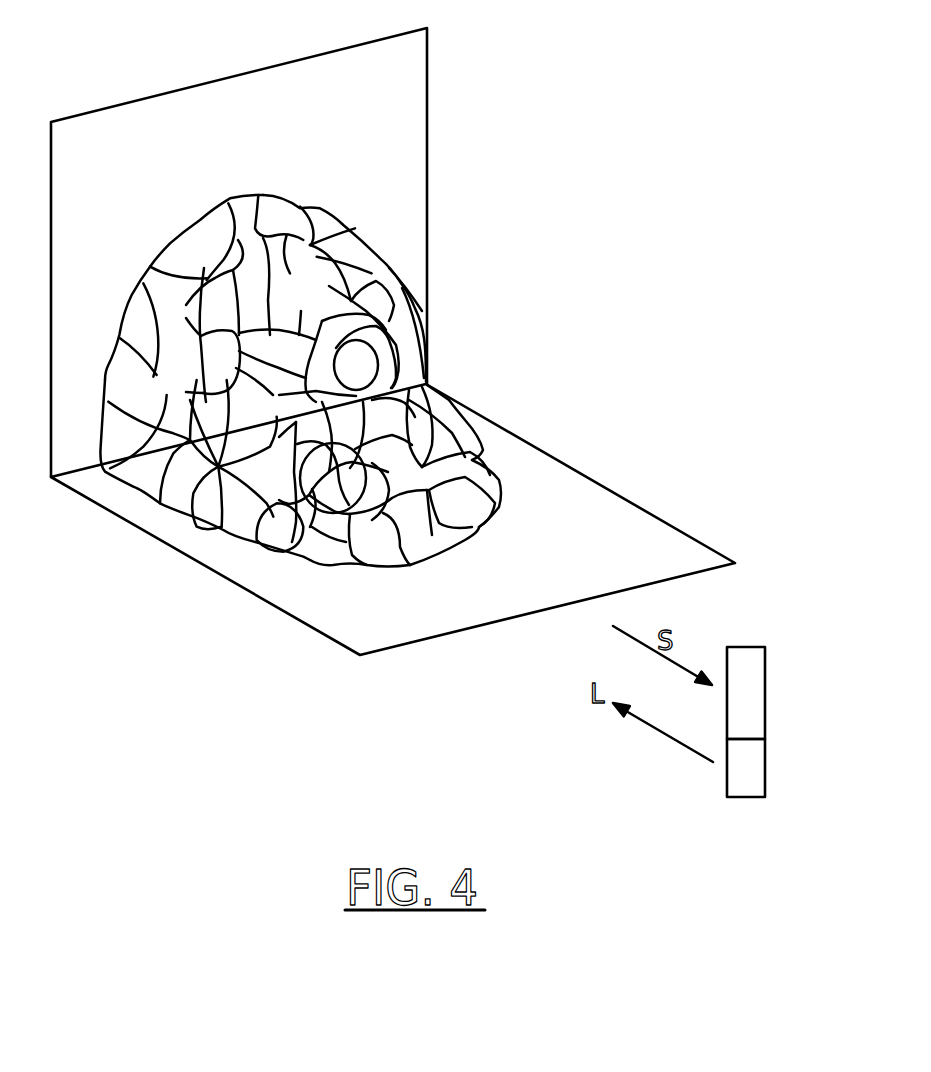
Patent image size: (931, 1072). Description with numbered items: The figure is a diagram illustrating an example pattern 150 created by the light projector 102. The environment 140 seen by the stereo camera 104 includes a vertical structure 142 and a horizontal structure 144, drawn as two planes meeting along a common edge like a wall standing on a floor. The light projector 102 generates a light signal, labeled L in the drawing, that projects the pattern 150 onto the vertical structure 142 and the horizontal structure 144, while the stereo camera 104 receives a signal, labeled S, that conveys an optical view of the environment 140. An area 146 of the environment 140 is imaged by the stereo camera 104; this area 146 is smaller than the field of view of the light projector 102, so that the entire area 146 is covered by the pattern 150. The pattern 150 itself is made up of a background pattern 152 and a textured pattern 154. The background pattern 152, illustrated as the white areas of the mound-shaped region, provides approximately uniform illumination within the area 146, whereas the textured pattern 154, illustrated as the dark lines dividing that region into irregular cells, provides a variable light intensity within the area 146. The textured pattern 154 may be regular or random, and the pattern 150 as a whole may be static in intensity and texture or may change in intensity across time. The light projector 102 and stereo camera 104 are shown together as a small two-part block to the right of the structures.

The environment 140 is at (386, 341).
The vertical structures 142 is at (310, 141).
The horizontal structures 144 is at (640, 560).
The area 146 is at (318, 403).
The pattern 150 is at (337, 295).
The background pattern 152 is at (477, 528).
The textured pattern 154 is at (377, 557).
The light projector 102 is at (767, 772).
The stereo camera 104 is at (767, 690).